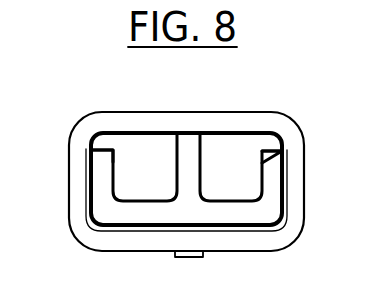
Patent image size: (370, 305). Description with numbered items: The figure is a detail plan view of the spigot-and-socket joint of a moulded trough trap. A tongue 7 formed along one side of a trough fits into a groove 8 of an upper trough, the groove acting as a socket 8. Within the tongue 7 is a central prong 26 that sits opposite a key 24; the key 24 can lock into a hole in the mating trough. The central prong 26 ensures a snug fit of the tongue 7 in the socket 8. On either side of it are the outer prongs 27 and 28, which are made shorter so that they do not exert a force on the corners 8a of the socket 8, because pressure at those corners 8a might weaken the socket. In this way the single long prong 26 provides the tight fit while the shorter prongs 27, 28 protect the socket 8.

The groove 8 is at (257, 125).
The corners of the socket 8a is at (92, 149).
The tongue 7 is at (148, 216).
The central prong 26 is at (190, 137).
The outer prong 27 is at (105, 162).
The outer prong 28 is at (271, 163).
The key 24 is at (188, 258).